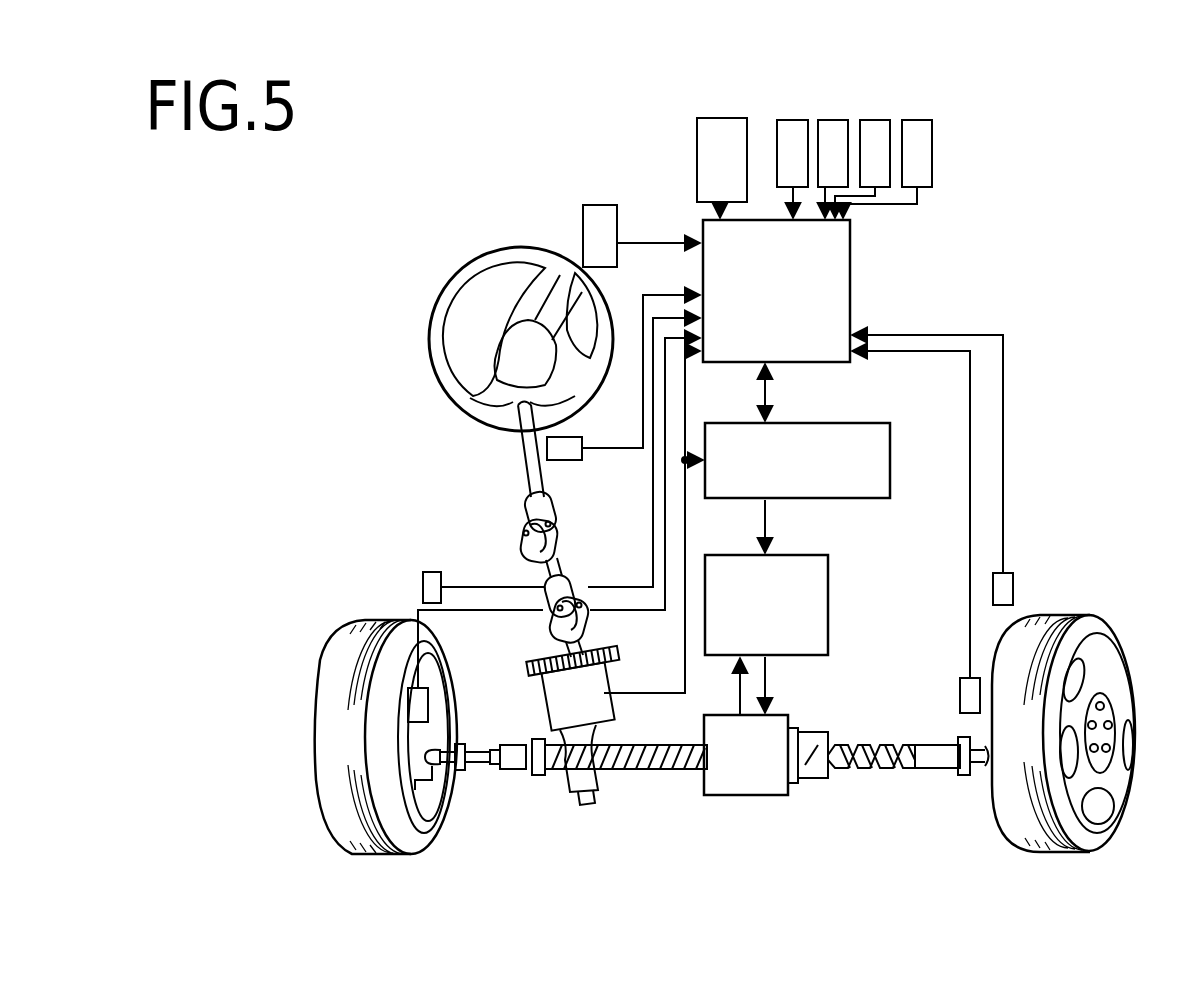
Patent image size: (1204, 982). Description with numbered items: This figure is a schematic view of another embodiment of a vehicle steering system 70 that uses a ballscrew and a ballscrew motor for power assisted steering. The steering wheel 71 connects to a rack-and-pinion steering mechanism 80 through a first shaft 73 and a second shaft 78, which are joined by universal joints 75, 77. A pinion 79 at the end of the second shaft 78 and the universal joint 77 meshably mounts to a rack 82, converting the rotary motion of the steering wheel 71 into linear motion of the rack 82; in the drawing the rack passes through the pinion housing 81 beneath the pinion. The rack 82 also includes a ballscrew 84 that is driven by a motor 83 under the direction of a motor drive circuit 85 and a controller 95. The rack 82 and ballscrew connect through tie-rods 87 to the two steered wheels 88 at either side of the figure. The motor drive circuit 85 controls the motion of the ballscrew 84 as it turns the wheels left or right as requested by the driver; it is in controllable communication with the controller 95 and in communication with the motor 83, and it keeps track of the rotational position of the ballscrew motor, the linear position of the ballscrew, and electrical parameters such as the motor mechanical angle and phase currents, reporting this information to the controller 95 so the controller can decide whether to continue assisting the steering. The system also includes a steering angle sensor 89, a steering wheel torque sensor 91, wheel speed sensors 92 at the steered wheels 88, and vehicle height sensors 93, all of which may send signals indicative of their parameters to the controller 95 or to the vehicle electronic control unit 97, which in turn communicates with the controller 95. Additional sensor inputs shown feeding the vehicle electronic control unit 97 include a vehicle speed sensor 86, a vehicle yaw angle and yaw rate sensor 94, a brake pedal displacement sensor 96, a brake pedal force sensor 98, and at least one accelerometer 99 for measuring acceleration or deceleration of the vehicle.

The vehicle steering system 70 is at (368, 203).
The steering wheel 71 is at (452, 298).
The first shaft 73 is at (527, 462).
The universal joint 75 is at (558, 500).
The universal joint 77 is at (552, 580).
The second shaft 78 is at (565, 568).
The pinion 79 is at (580, 655).
The rack-and-pinion steering mechanism 80 is at (552, 778).
The pinion housing 81 is at (580, 795).
The rack 82 is at (620, 745).
The motor 83 is at (757, 797).
The ballscrew 84 is at (870, 742).
The motor drive circuit 85 is at (828, 582).
The vehicle speed sensor 86 is at (718, 118).
The tie-rods 87 is at (452, 752).
The steered wheels 88 is at (375, 622).
The steering angle sensor 89 is at (597, 205).
The steering wheel torque sensor 91 is at (574, 437).
The wheel speed sensors 92 is at (405, 692).
The vehicle height sensors 93 is at (432, 572).
The vehicle yaw angle and yaw rate sensor 94 is at (790, 120).
The controller 95 is at (890, 468).
The brake pedal displacement sensor 96 is at (832, 120).
The vehicle electronic control unit 97 is at (820, 363).
The brake pedal force sensor 98 is at (875, 120).
The accelerometer 99 is at (918, 120).